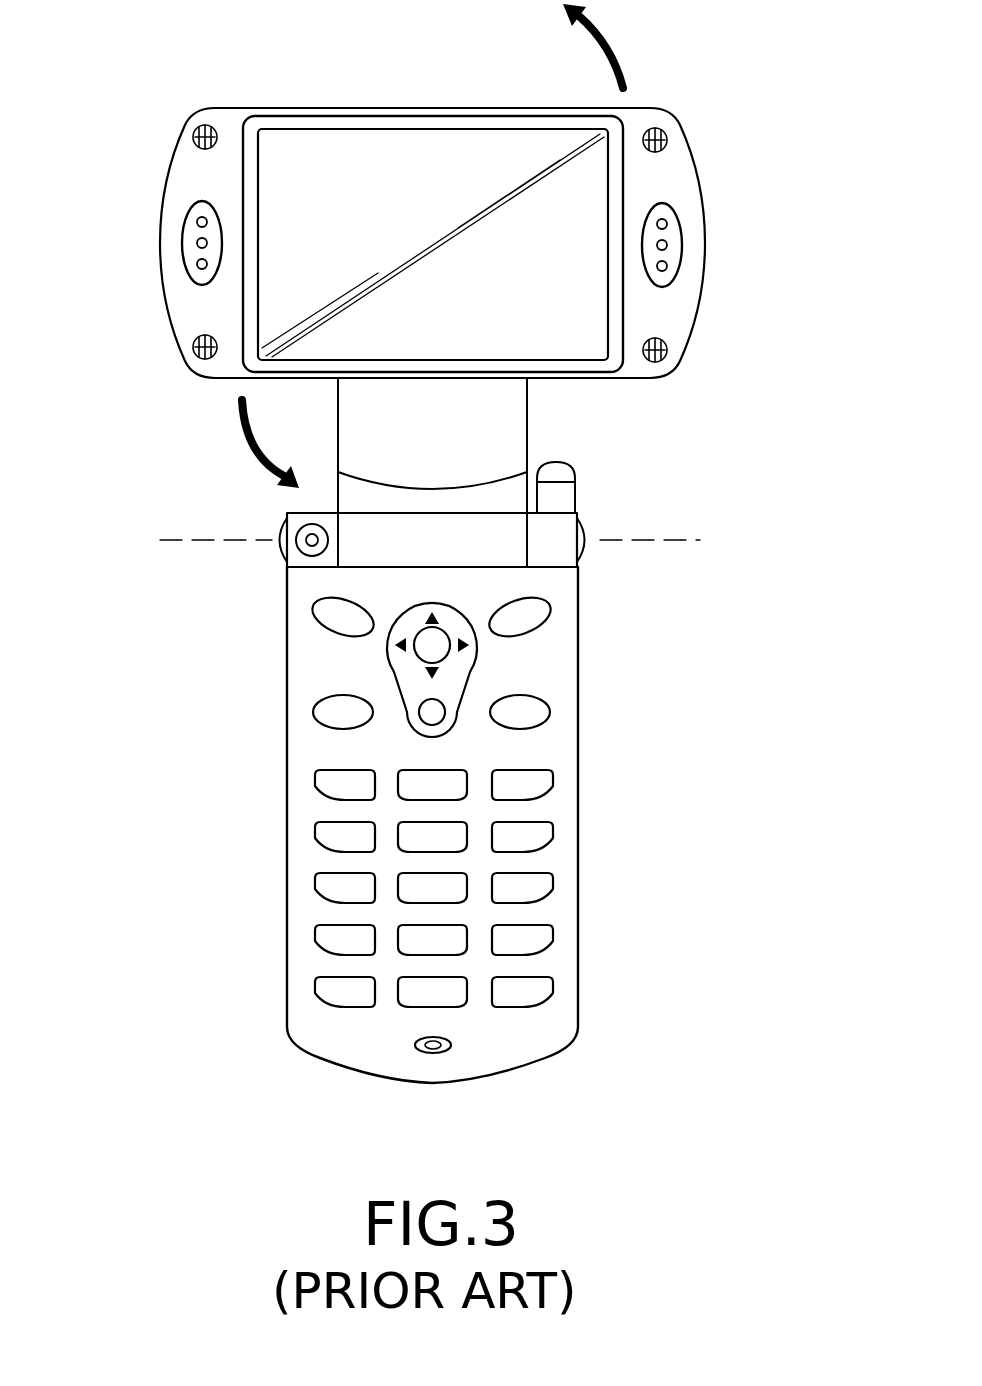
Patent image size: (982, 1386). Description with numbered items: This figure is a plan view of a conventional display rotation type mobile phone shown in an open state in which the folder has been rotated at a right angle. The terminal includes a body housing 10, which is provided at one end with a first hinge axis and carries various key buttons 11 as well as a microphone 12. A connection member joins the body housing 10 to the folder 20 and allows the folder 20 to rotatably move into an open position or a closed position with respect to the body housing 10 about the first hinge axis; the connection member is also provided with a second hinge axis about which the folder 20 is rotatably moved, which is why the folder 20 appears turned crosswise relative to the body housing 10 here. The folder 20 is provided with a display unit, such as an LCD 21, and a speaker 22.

The body housing 10 is at (610, 804).
The key buttons 11 is at (270, 775).
The microphone 12 is at (432, 1054).
The folder 20 is at (724, 221).
The LCD 21 is at (328, 145).
The speaker 22 is at (185, 243).